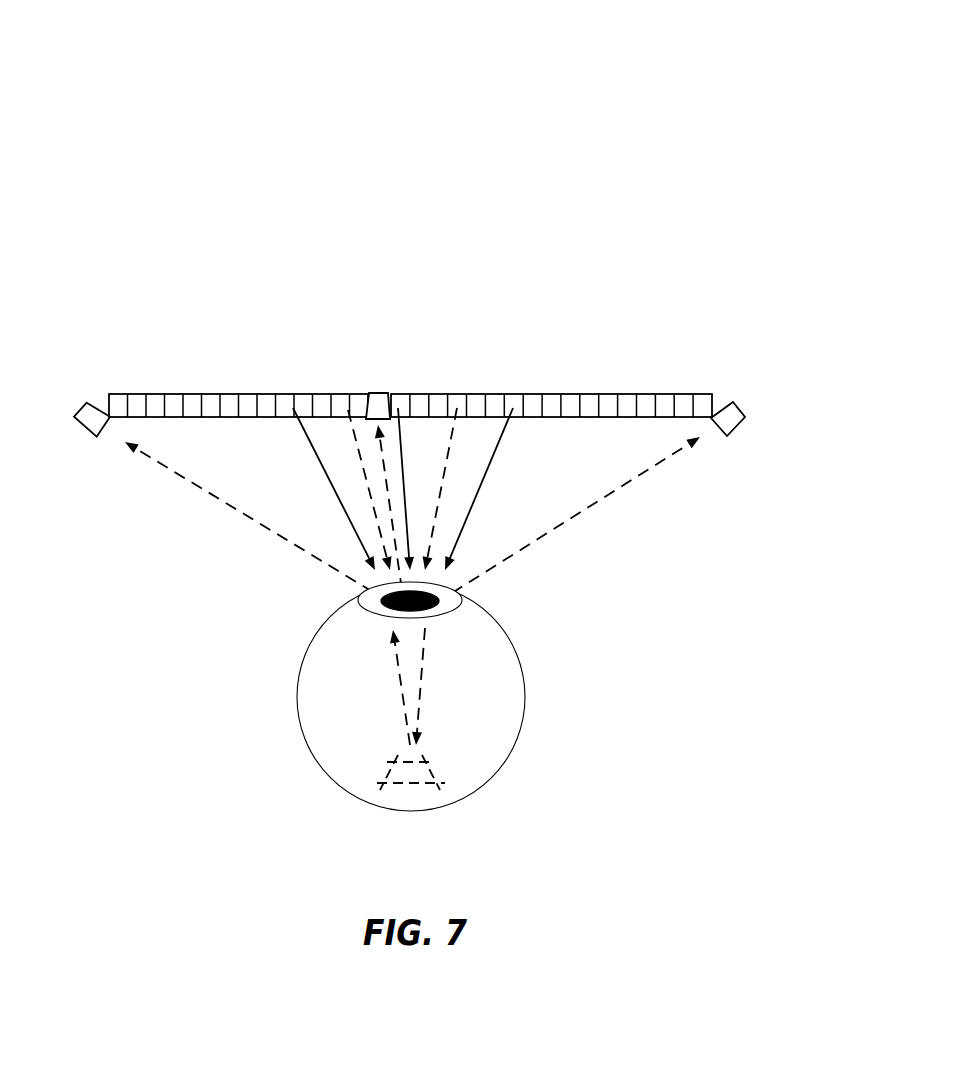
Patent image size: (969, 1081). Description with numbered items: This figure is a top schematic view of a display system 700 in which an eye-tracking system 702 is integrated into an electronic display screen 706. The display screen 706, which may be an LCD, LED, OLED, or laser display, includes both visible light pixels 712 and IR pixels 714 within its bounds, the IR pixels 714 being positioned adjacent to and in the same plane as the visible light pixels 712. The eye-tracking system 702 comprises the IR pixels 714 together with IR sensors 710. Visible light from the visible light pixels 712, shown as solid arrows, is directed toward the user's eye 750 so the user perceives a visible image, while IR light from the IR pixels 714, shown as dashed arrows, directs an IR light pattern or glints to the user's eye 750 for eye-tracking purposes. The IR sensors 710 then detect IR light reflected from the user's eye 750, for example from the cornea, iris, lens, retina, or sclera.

The display system 700 is at (118, 84).
The eye-tracking system 702 is at (438, 324).
The electronic display screen 706 is at (221, 282).
The IR sensors 710 is at (82, 405).
The visible light pixels 712 is at (287, 398).
The IR pixels 714 is at (342, 398).
The user's eye 750 is at (238, 669).